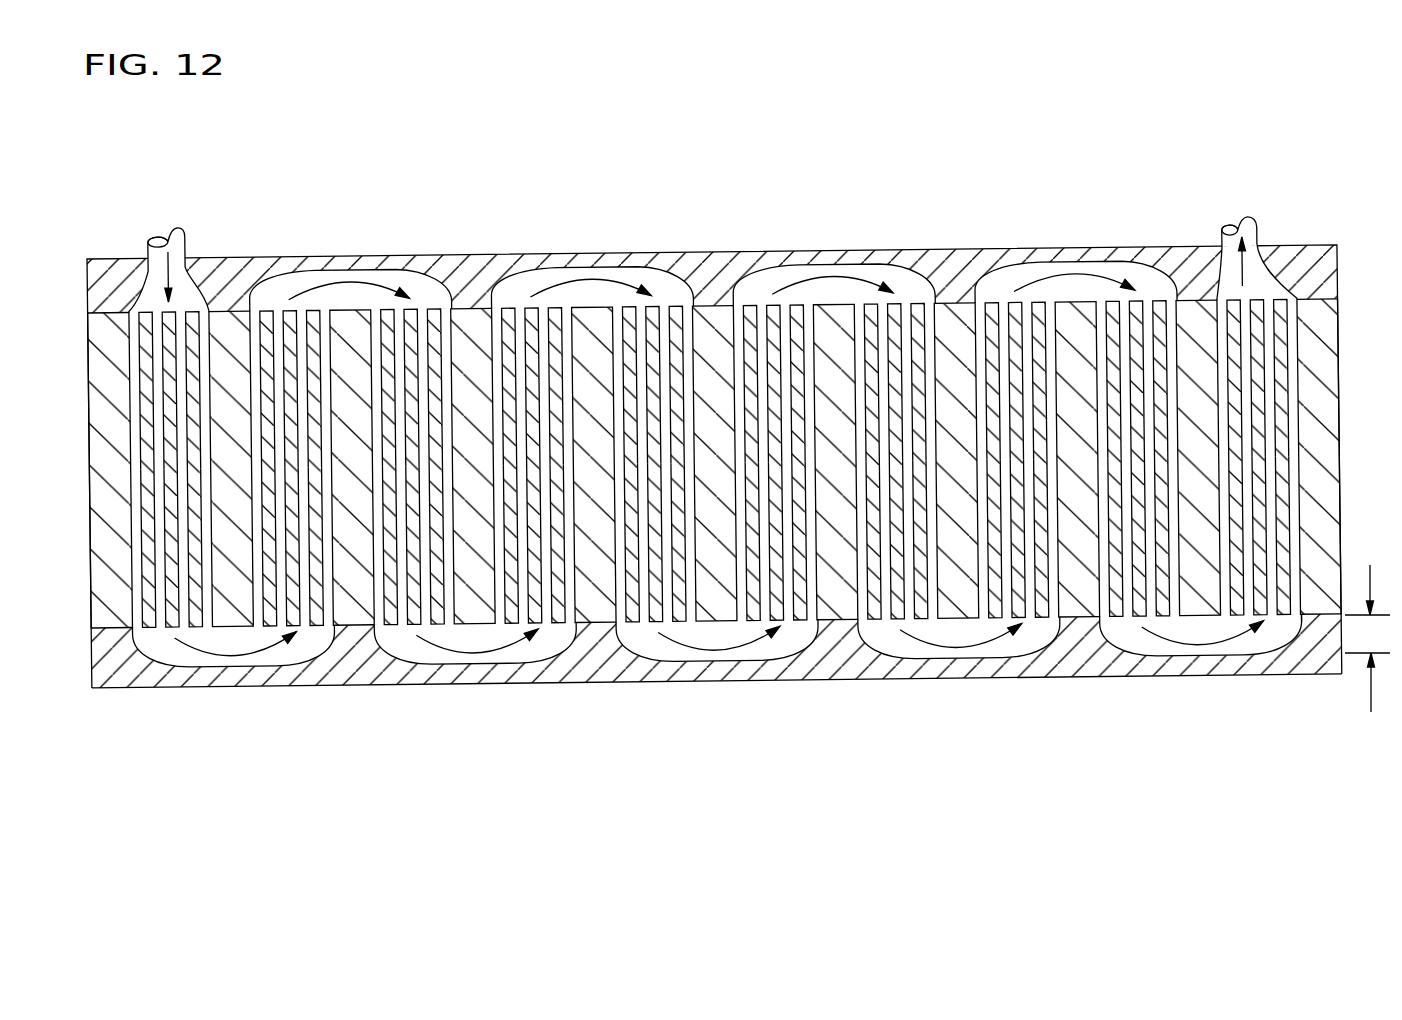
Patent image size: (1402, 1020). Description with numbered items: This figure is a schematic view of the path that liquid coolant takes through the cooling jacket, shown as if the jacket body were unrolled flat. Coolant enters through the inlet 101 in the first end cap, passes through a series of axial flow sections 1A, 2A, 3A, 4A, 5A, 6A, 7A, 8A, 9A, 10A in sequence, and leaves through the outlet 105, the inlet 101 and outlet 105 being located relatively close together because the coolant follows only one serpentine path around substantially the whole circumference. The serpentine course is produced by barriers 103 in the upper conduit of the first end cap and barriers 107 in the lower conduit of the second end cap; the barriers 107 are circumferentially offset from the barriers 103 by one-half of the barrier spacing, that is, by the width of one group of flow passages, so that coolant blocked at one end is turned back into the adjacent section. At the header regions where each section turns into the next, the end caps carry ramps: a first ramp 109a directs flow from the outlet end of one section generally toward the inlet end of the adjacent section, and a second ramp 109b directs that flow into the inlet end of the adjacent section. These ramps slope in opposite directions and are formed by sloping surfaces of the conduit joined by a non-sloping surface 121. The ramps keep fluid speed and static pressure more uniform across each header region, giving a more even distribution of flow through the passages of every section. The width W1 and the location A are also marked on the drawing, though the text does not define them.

The inlet 101 is at (172, 230).
The barriers 103 is at (92, 283).
The outlet 105 is at (1242, 217).
The barriers 107 is at (113, 632).
The first ramp 109a is at (283, 290).
The second ramp 109b is at (425, 292).
The non-sloping surface 121 is at (361, 297).
The flow path section 1A is at (147, 293).
The flow path section 2A is at (302, 330).
The flow path section 3A is at (430, 598).
The flow path section 4A is at (545, 328).
The flow path section 5A is at (668, 595).
The flow path section 6A is at (787, 325).
The flow path section 7A is at (913, 600).
The flow path section 8A is at (1028, 325).
The flow path section 9A is at (1155, 595).
The flow path section 10A is at (1268, 328).
The width of communicating passage W1 is at (1367, 638).
The corner portion A is at (1305, 638).